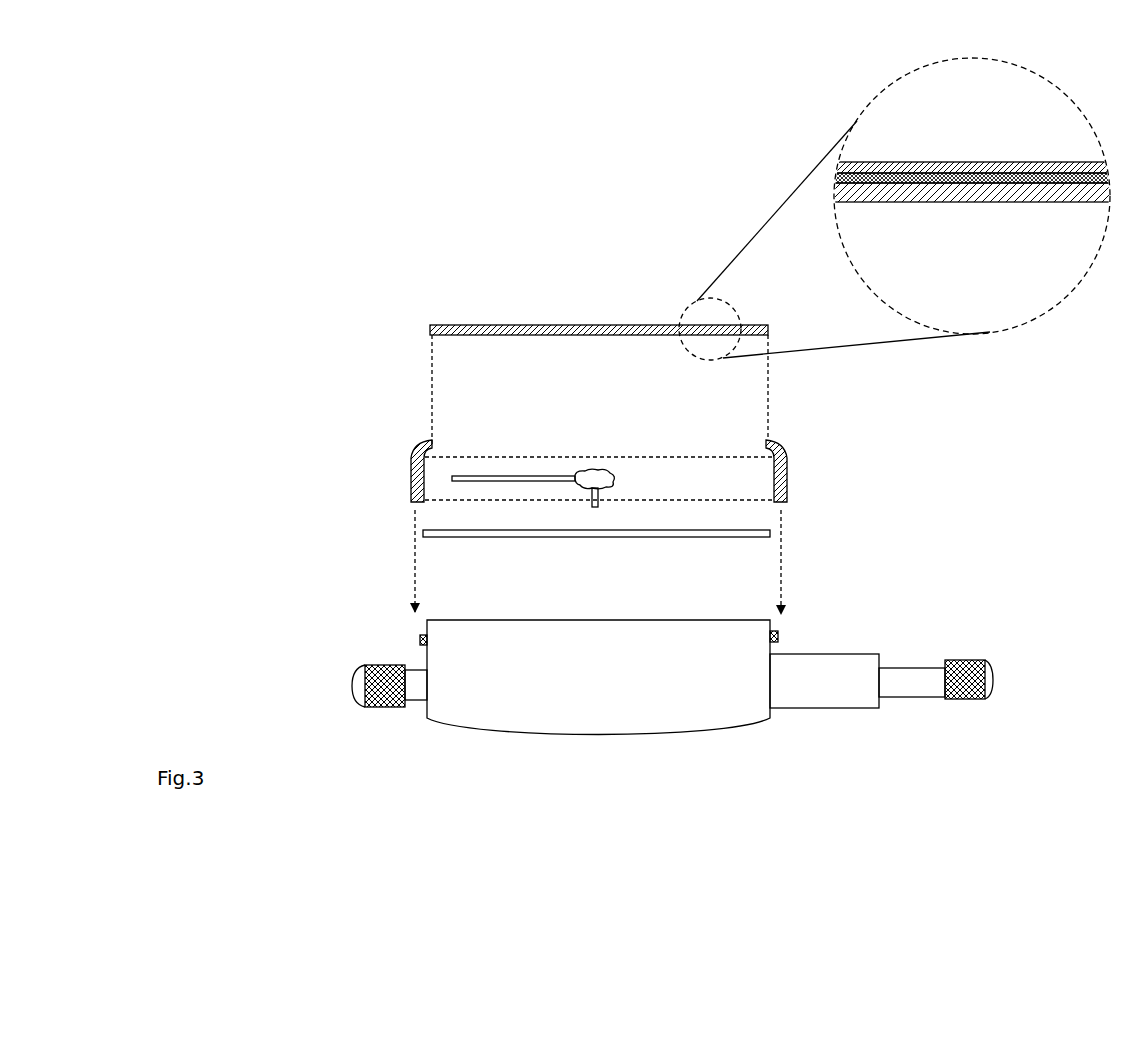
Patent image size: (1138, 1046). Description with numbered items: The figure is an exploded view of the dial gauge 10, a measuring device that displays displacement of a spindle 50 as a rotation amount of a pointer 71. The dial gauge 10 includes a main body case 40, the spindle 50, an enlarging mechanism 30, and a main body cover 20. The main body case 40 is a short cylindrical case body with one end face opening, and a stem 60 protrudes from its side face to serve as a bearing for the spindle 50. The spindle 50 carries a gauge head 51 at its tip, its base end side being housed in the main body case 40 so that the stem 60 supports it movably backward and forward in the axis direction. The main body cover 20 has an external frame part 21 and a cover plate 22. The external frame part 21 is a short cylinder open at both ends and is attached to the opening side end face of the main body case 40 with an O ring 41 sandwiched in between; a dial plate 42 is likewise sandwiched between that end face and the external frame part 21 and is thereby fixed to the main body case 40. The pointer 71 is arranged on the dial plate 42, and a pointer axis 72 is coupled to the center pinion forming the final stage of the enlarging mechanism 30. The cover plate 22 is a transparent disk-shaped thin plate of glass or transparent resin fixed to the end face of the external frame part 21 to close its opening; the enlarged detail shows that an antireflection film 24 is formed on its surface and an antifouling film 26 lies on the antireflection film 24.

The dial gauge 10 is at (310, 315).
The main body cover 20 is at (870, 464).
The external frame part 21 is at (787, 468).
The cover plate 22 is at (537, 325).
The antireflection film 24 is at (908, 183).
The antifouling film 26 is at (1022, 162).
The enlarging mechanism 30 is at (677, 697).
The main body case 40 is at (510, 715).
The O ring 41 is at (420, 640).
The dial plate 42 is at (662, 540).
The spindle 50 is at (920, 690).
The gauge head 51 is at (993, 680).
The stem 60 is at (833, 690).
The pointer 71 is at (516, 476).
The pointer axis 72 is at (600, 497).